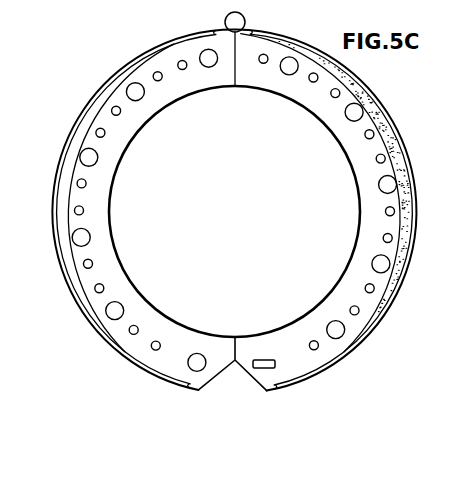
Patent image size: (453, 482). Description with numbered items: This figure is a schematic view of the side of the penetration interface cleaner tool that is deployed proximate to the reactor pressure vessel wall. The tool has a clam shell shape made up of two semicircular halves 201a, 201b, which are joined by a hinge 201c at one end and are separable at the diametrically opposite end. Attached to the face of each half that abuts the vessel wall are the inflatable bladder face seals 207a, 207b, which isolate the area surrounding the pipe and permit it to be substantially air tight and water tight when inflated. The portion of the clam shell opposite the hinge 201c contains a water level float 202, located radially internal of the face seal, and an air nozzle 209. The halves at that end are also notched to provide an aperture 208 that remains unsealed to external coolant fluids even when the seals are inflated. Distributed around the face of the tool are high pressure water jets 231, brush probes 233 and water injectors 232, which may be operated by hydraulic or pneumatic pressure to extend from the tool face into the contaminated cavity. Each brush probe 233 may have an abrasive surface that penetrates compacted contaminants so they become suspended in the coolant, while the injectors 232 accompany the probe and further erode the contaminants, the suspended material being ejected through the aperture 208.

The semicircular half 201a is at (356, 173).
The semicircular half 201b is at (108, 189).
The hinge 201c is at (244, 21).
The water level float 202 is at (263, 358).
The face seal 207a is at (393, 304).
The face seal 207b is at (101, 329).
The aperture 208 is at (241, 376).
The air nozzle 209 is at (201, 370).
The high pressure water jet 231 is at (117, 321).
The high pressure injector 232 is at (133, 335).
The brush probe 233 is at (318, 349).